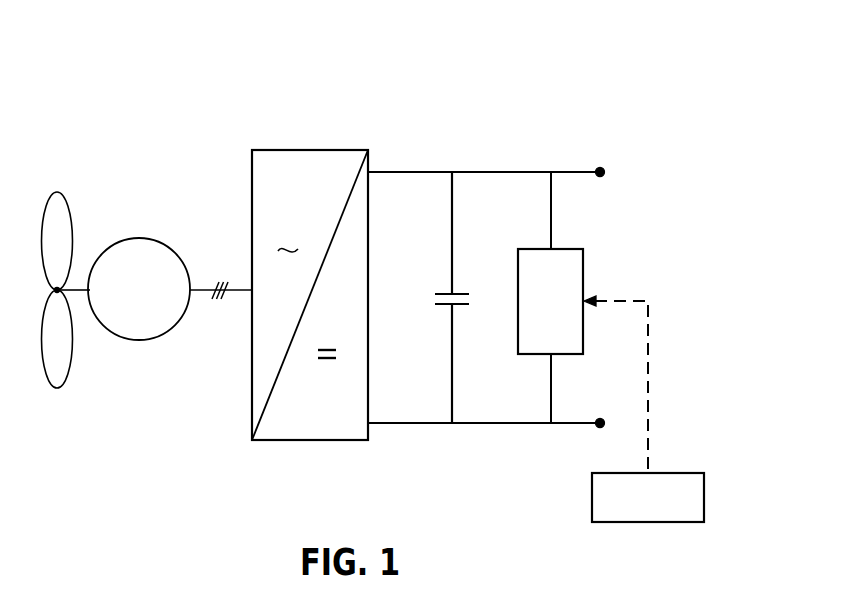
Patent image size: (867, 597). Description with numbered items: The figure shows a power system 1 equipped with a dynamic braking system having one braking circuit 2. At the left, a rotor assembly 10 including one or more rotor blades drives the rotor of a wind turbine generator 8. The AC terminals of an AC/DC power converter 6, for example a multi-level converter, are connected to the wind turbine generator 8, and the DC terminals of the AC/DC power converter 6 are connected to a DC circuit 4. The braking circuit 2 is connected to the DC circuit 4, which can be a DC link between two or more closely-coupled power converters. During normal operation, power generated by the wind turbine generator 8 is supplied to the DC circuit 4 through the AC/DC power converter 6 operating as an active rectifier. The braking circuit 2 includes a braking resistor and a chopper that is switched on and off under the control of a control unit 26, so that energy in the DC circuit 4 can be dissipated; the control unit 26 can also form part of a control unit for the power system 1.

The power system 1 is at (599, 66).
The braking circuit 2 is at (540, 311).
The DC circuit 4 is at (461, 153).
The AC/DC power converter 6 is at (307, 150).
The wind turbine generator 8 is at (137, 238).
The rotor assembly 10 is at (55, 191).
The control unit 26 is at (630, 510).